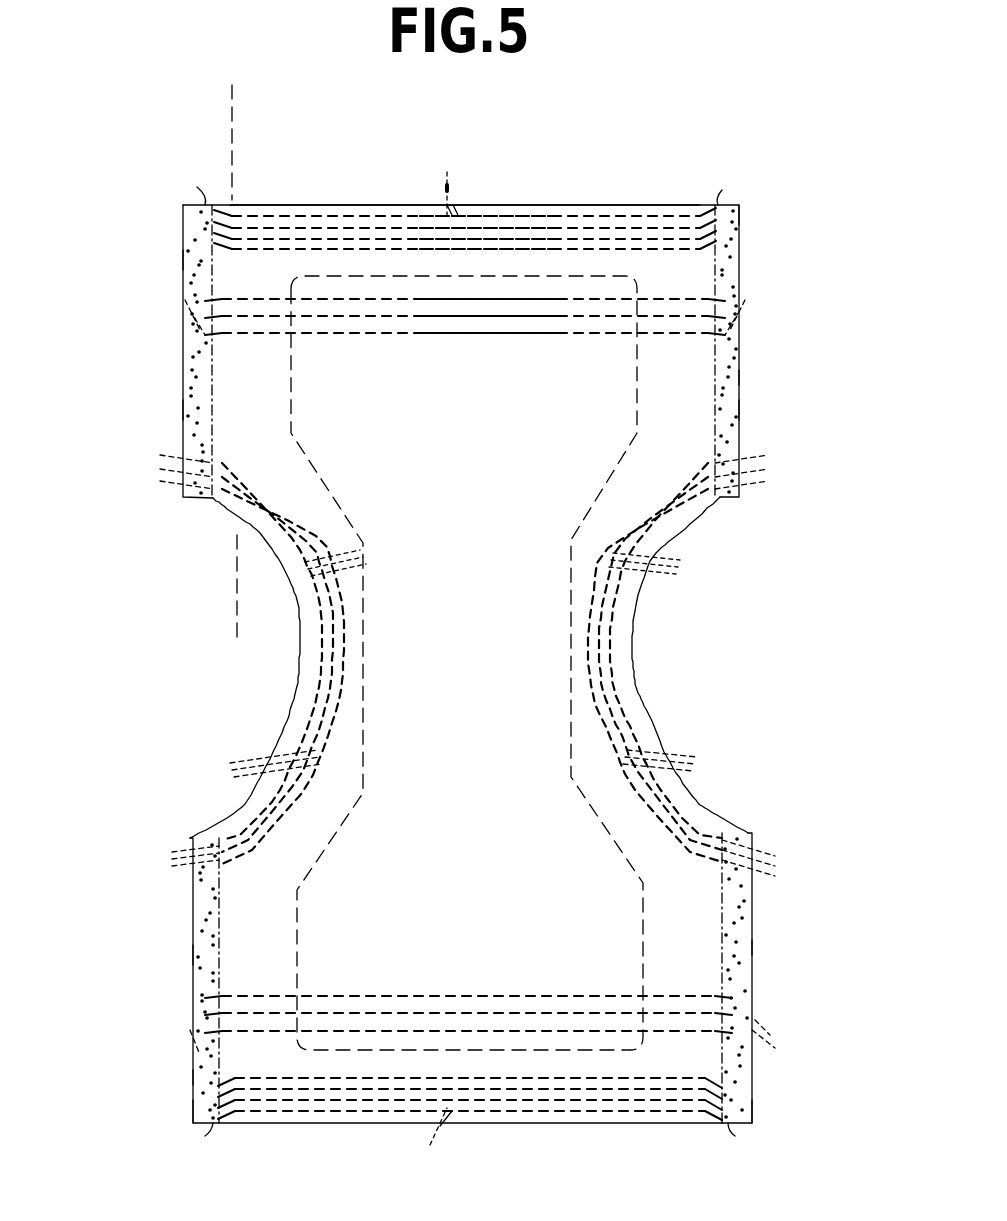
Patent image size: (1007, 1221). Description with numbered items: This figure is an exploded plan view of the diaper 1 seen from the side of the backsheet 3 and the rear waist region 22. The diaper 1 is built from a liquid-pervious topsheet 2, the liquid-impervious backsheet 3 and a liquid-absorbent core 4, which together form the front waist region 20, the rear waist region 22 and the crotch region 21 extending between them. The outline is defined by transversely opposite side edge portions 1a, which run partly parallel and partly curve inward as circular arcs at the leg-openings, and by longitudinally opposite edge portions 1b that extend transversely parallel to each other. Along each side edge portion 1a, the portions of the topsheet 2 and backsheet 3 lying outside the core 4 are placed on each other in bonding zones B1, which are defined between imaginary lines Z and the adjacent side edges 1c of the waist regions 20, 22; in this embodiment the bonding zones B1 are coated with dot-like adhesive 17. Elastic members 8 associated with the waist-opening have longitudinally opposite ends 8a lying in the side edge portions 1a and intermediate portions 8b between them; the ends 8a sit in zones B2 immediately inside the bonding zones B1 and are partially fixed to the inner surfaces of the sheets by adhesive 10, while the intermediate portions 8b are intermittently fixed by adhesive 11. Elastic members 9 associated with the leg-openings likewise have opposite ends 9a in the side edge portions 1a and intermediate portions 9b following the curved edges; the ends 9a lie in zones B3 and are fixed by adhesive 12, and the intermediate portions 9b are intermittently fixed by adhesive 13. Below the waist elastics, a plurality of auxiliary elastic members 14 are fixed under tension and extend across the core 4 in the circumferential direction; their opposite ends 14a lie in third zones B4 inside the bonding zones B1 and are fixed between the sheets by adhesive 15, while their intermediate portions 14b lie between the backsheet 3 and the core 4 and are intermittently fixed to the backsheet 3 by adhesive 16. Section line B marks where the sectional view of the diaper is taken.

The diaper 1 is at (727, 132).
The transversely opposite side edge portions 1a is at (739, 410).
The longitudinally opposite edge portions 1b is at (355, 205).
The side edges 1c is at (183, 262).
The topsheet 2 is at (752, 978).
The backsheet 3 is at (222, 380).
The liquid-absorbent core 4 is at (620, 398).
The elastic members associated with the waist-opening 8 is at (582, 235).
The longitudinally opposite ends of the waist elastic members 8a is at (284, 258).
The intermediate portions of the waist elastic members 8b is at (510, 259).
The elastic members associated with the leg-openings 9 is at (463, 663).
The opposite ends of the leg elastic members 9a is at (260, 503).
The intermediate portions of the leg elastic members 9b is at (335, 622).
The adhesive 10 is at (465, 673).
The adhesive 11 is at (438, 663).
The adhesive 12 is at (468, 663).
The adhesive 13 is at (514, 559).
The auxiliary elastic members 14 is at (577, 305).
The opposite ends of the auxiliary elastic members 14a is at (280, 297).
The intermediate portions of the auxiliary elastic members 14b is at (510, 294).
The adhesive 15 is at (183, 312).
The adhesive 16 is at (393, 297).
The dot-like adhesive 17 is at (200, 420).
The front waist region 20 is at (86, 215).
The crotch region 21 is at (86, 500).
The rear waist region 22 is at (86, 843).
The section line B is at (233, 364).
The bonding zones B1 is at (183, 218).
The zones for the waist elastic ends B2 is at (288, 259).
The zones for the leg elastic ends B3 is at (283, 446).
The third zones for the auxiliary elastic ends B4 is at (288, 341).
The imaginary lines Z is at (183, 345).